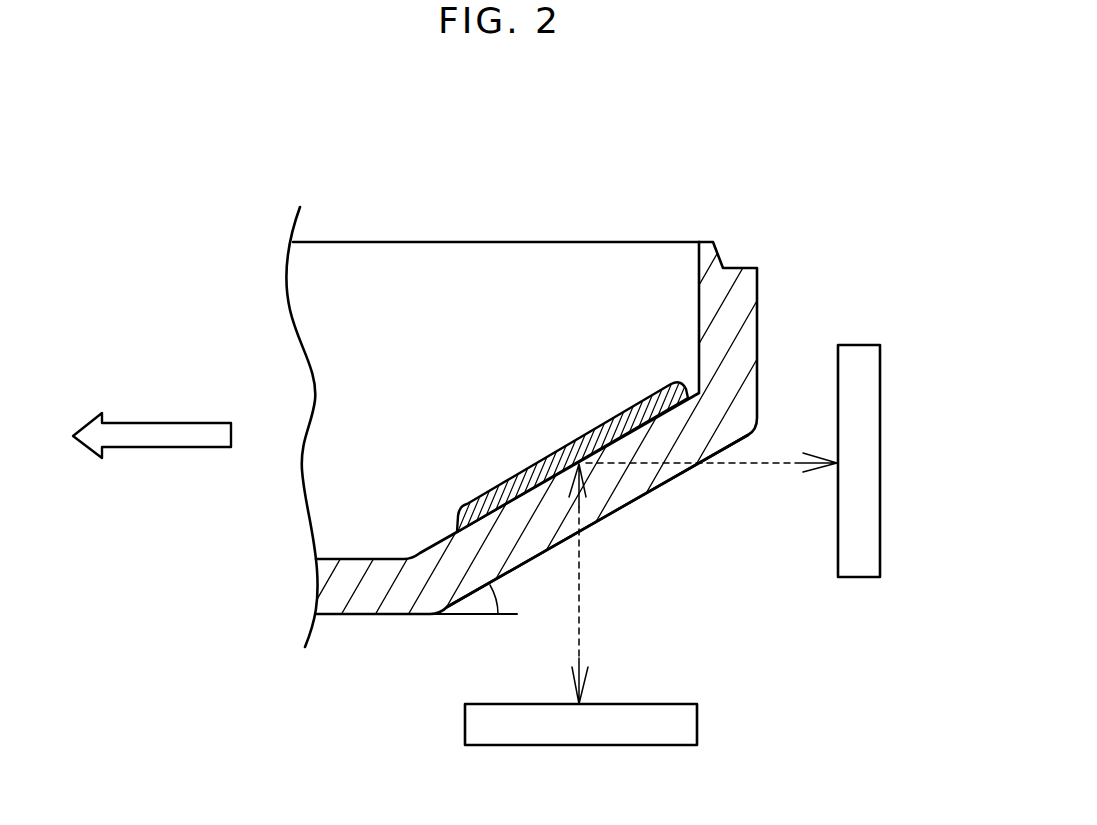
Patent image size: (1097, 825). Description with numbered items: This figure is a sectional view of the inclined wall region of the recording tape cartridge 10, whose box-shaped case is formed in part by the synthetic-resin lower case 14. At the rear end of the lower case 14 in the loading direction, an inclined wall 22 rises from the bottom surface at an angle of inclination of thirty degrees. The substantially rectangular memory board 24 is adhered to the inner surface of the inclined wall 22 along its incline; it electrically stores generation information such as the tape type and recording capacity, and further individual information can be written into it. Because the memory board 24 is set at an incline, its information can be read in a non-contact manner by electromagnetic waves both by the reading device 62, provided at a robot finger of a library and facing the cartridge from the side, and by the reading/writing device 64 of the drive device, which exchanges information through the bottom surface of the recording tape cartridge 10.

The recording tape cartridge 10 is at (618, 169).
The lower case 14 is at (757, 312).
The inclined wall 22 is at (629, 500).
The memory board 24 is at (542, 459).
The reading device 62 is at (882, 545).
The reading/writing device 64 is at (698, 717).